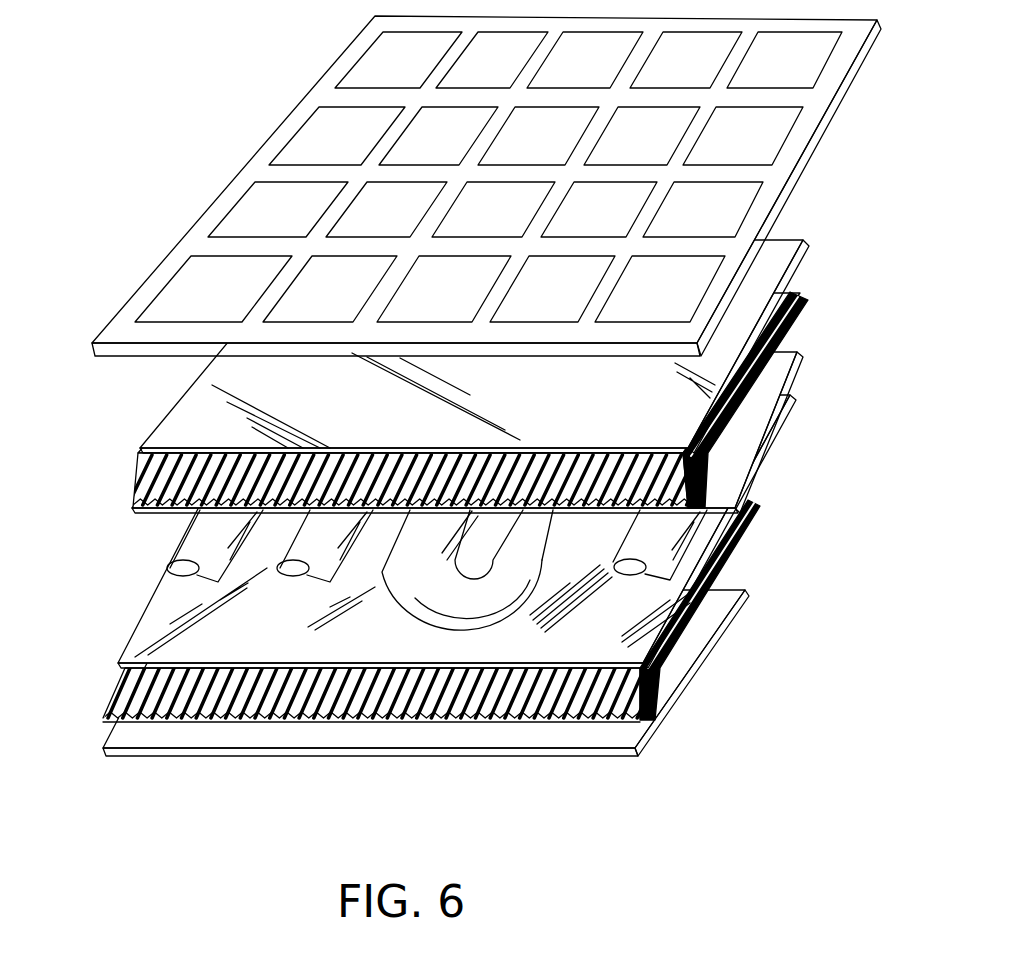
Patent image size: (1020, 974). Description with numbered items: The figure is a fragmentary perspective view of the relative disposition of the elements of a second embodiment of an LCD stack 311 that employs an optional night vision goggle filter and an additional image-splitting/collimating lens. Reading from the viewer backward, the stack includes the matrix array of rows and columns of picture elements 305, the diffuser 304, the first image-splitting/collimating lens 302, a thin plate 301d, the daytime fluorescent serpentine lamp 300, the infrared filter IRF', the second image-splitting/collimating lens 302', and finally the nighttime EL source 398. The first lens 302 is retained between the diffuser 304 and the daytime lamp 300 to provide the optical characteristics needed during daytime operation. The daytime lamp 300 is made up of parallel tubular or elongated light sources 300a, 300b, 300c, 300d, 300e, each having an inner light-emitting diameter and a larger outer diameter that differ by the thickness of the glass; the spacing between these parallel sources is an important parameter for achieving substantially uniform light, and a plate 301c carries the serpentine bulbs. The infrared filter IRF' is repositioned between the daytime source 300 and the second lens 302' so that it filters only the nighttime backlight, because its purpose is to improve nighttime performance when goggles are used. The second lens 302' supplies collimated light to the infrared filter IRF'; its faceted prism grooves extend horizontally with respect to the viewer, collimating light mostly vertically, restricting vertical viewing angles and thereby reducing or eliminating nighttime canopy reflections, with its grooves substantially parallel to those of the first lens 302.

The display backlight assembly 311 is at (507, 186).
The matrix array of rows and columns of picture elements 305 is at (790, 153).
The diffuser 304 is at (790, 246).
The first image-splitting/collimating lens 302 is at (514, 393).
The transparent plate 301d is at (792, 328).
The daytime fluorescent serpentine lamp 300 is at (455, 619).
The tubular or elongated daytime light source 300a is at (190, 546).
The light pipe 300b is at (322, 552).
The U-shaped light pipe 300c is at (415, 573).
The light pipe 300d is at (548, 548).
The light pipe 300e is at (675, 553).
The light pipe plate 301c is at (457, 605).
The infrared filter IRF' is at (457, 533).
The second image-splitting/collimating lens 302' is at (431, 620).
The nighttime EL source 398 is at (645, 756).